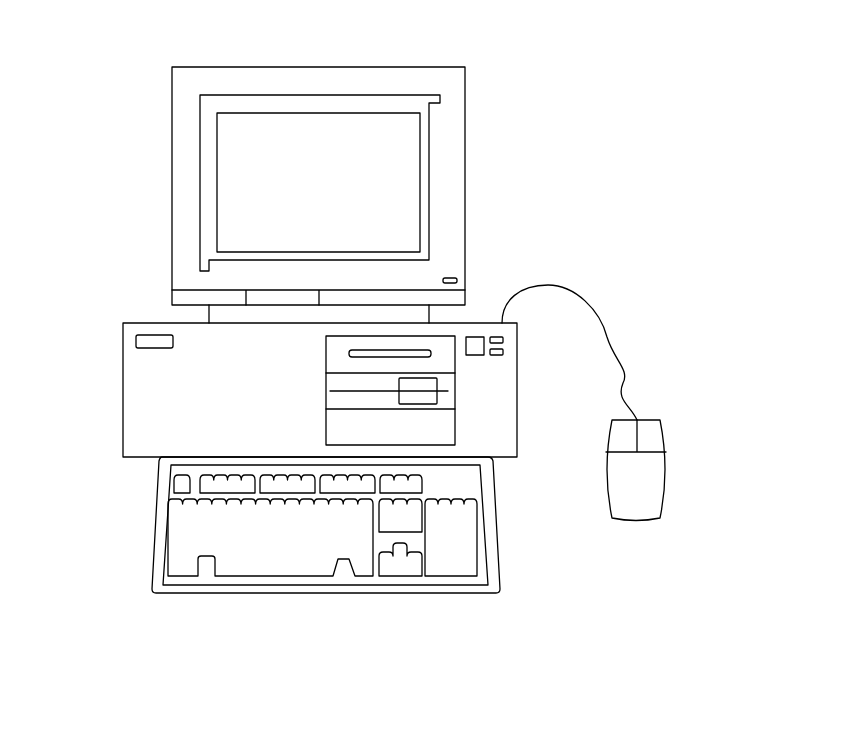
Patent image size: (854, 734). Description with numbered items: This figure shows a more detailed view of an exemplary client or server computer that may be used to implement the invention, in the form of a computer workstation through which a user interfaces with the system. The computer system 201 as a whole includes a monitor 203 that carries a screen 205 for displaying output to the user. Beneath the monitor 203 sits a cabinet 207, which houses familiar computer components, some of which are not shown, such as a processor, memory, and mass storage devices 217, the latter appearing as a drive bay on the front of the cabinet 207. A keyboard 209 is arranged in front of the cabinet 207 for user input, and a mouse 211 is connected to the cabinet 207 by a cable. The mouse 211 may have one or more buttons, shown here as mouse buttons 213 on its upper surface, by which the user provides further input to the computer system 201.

The computer system 201 is at (486, 46).
The monitor 203 is at (467, 160).
The screen 205 is at (235, 171).
The cabinet 207 is at (153, 328).
The keyboard 209 is at (200, 593).
The mouse 211 is at (637, 507).
The mouse buttons 213 is at (650, 440).
The mass storage devices 217 is at (445, 340).